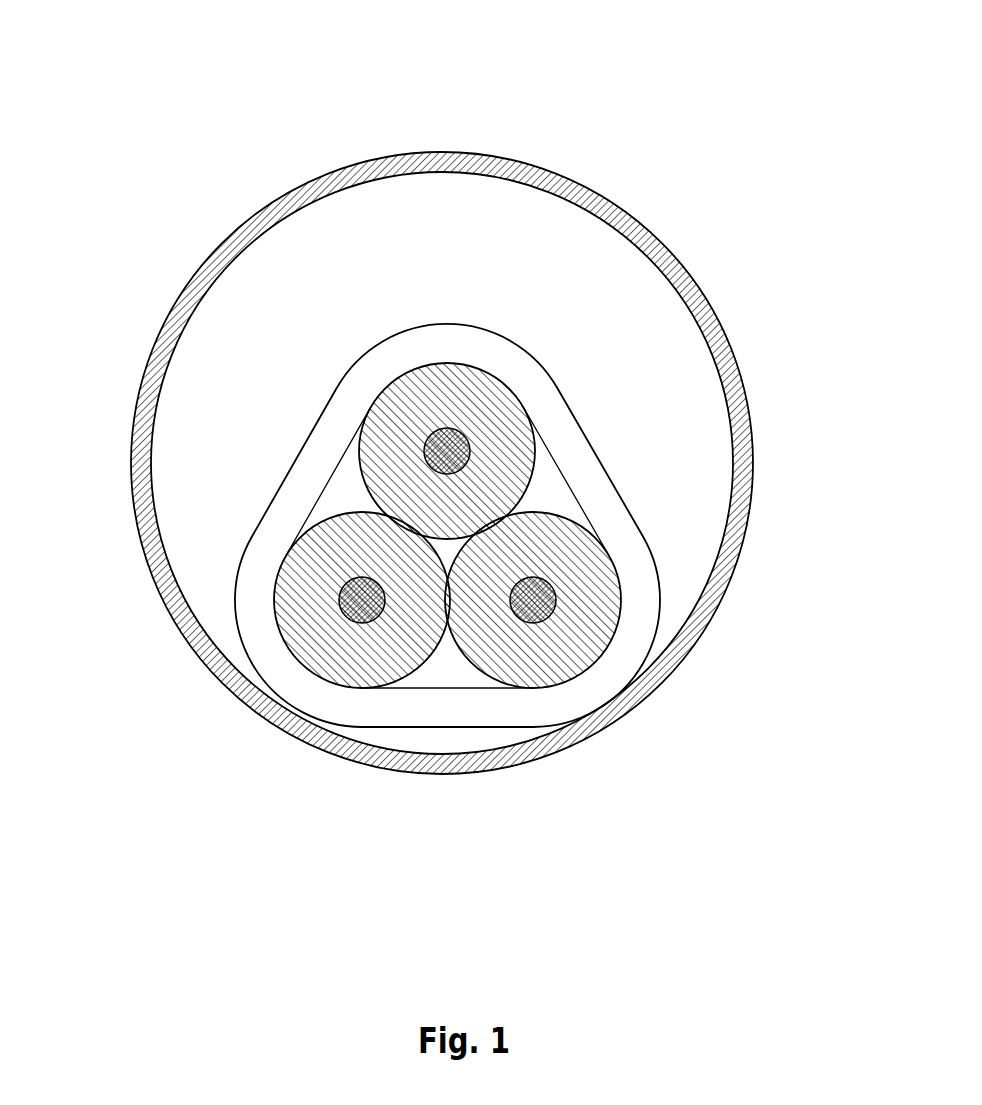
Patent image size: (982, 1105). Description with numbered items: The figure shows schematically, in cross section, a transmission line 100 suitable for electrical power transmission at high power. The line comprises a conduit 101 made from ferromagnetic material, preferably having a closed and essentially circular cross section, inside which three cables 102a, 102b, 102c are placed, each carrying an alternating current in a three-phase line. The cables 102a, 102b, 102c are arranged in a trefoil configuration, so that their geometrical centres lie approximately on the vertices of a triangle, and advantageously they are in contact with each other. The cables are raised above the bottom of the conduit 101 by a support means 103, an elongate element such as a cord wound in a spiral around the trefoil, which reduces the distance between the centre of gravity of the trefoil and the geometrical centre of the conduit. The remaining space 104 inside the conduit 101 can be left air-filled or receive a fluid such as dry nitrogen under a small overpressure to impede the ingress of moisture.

The line 100 is at (215, 113).
The conduit 101 is at (733, 367).
The cable 102a is at (510, 447).
The cable 102b is at (590, 640).
The cable 102c is at (297, 653).
The support means 103 is at (303, 480).
The space 104 is at (602, 272).